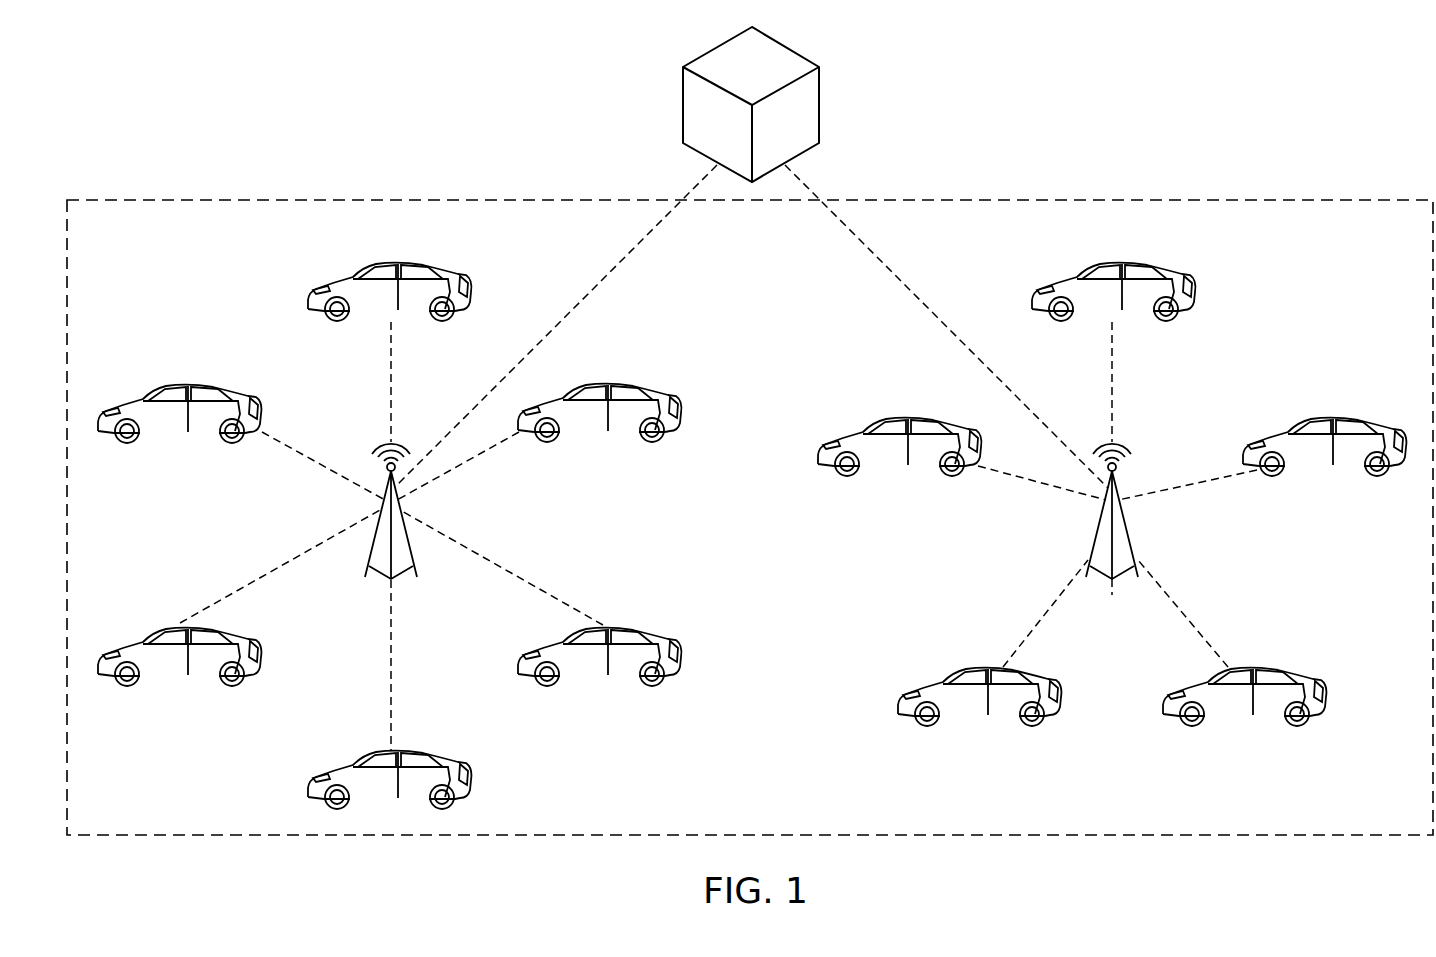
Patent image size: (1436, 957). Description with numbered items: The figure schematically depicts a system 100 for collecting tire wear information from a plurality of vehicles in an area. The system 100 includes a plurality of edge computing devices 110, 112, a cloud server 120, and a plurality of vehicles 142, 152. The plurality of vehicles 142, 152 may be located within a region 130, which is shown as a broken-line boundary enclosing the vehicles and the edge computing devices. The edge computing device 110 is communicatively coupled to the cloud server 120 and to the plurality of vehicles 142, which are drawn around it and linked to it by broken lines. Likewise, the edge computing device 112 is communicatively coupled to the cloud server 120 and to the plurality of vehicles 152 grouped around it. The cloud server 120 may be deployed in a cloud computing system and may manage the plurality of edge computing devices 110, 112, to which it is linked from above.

The system 100 is at (200, 97).
The edge computing device 110 is at (370, 567).
The edge computing device 112 is at (1123, 522).
The cloud server 120 is at (821, 107).
The region 130 is at (1253, 200).
The plurality of vehicles 142 is at (400, 262).
The plurality of vehicles 152 is at (1120, 262).